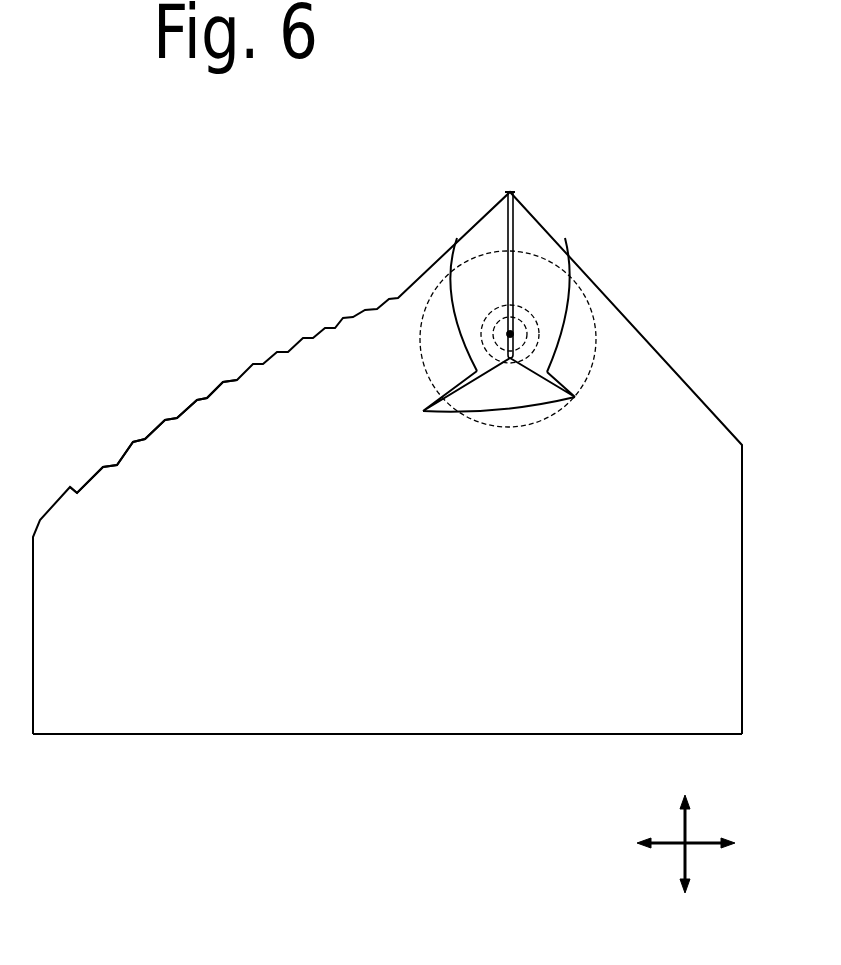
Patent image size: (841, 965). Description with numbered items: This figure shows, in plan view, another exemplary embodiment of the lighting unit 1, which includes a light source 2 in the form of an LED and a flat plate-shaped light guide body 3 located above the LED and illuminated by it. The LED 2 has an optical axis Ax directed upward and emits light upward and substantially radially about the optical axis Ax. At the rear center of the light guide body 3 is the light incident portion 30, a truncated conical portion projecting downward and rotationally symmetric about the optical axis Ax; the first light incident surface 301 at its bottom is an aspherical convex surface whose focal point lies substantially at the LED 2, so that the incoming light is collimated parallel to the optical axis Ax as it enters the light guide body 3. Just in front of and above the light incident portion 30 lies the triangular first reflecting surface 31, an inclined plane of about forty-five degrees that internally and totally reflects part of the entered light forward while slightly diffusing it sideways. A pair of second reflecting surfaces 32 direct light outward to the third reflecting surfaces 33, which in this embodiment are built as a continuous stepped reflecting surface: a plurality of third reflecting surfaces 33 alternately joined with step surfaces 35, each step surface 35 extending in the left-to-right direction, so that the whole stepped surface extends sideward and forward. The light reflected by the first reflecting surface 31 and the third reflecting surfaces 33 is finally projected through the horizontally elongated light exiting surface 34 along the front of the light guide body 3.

The lighting unit 1 is at (403, 100).
The light source 2 is at (522, 326).
The light guide body 3 is at (720, 493).
The light incident portion 30 is at (598, 342).
The first light incident surface 301 is at (527, 331).
The first reflecting surface 31 is at (532, 390).
The second reflecting surface 32 is at (540, 277).
The third reflecting surface 33 is at (365, 310).
The light exiting surface 34 is at (242, 735).
The step surface 35 is at (237, 380).
The optical axis Ax is at (510, 334).